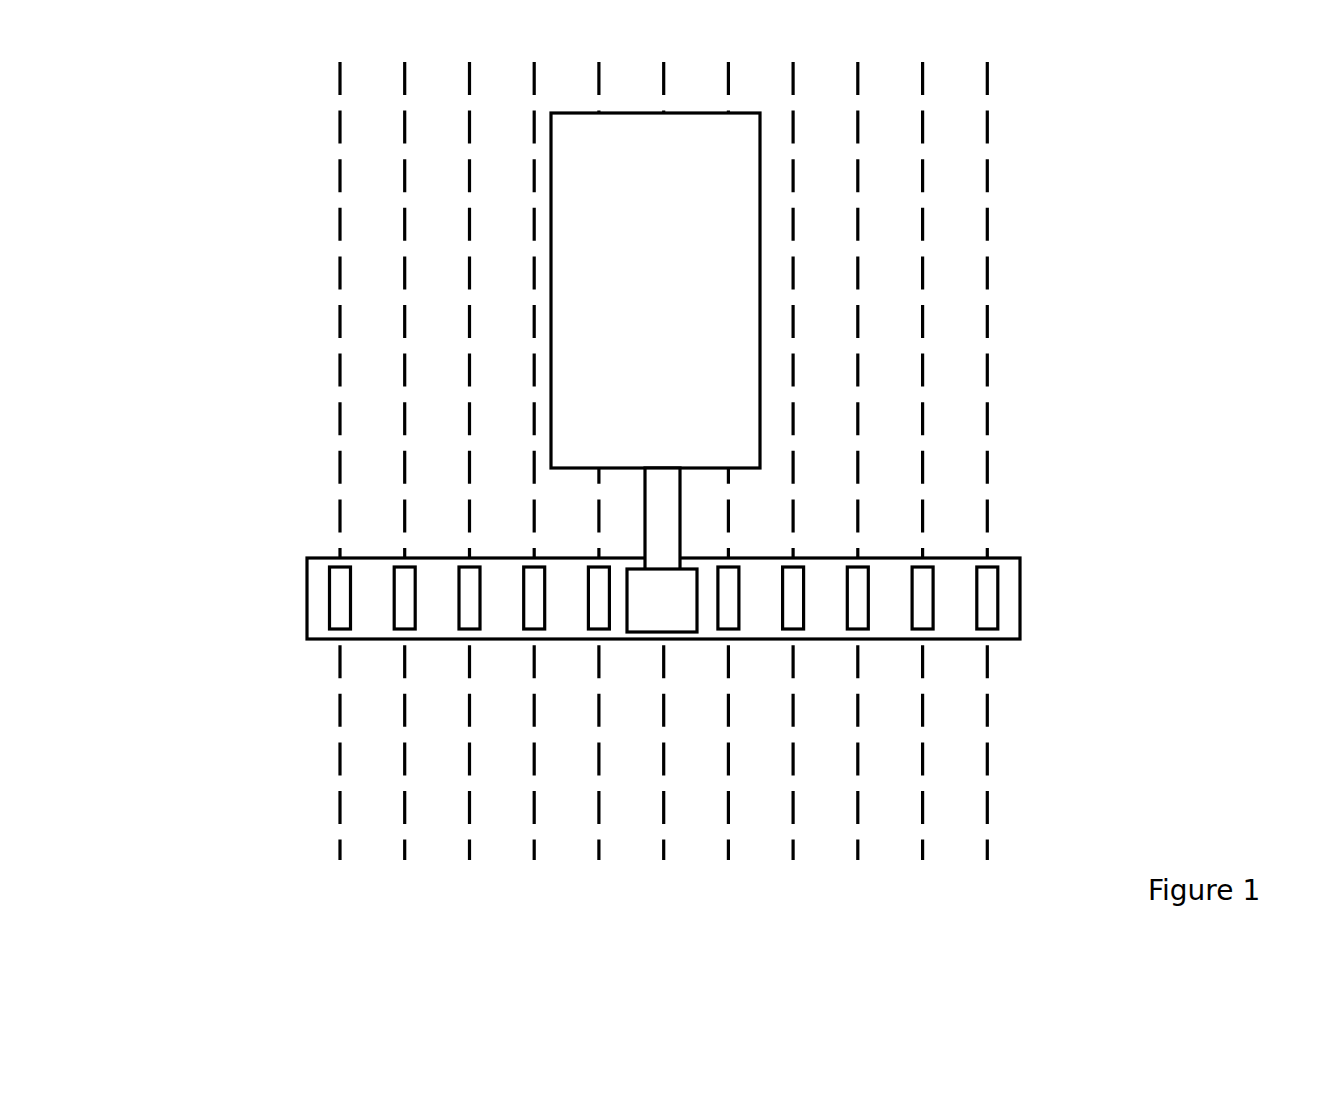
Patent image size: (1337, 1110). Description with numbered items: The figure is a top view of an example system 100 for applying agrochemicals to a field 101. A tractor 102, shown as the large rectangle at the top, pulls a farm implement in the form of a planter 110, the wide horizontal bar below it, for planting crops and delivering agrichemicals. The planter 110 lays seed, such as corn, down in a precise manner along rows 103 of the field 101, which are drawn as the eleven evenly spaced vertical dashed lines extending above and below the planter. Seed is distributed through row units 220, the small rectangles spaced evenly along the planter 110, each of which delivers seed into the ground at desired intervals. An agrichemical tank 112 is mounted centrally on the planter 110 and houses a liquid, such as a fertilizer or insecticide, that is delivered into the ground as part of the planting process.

The system 100 is at (243, 73).
The field 101 is at (335, 177).
The tractor 102 is at (655, 290).
The rows 103 is at (405, 267).
The planter 110 is at (307, 598).
The agrichemical tank 112 is at (662, 550).
The row units 220 is at (397, 615).